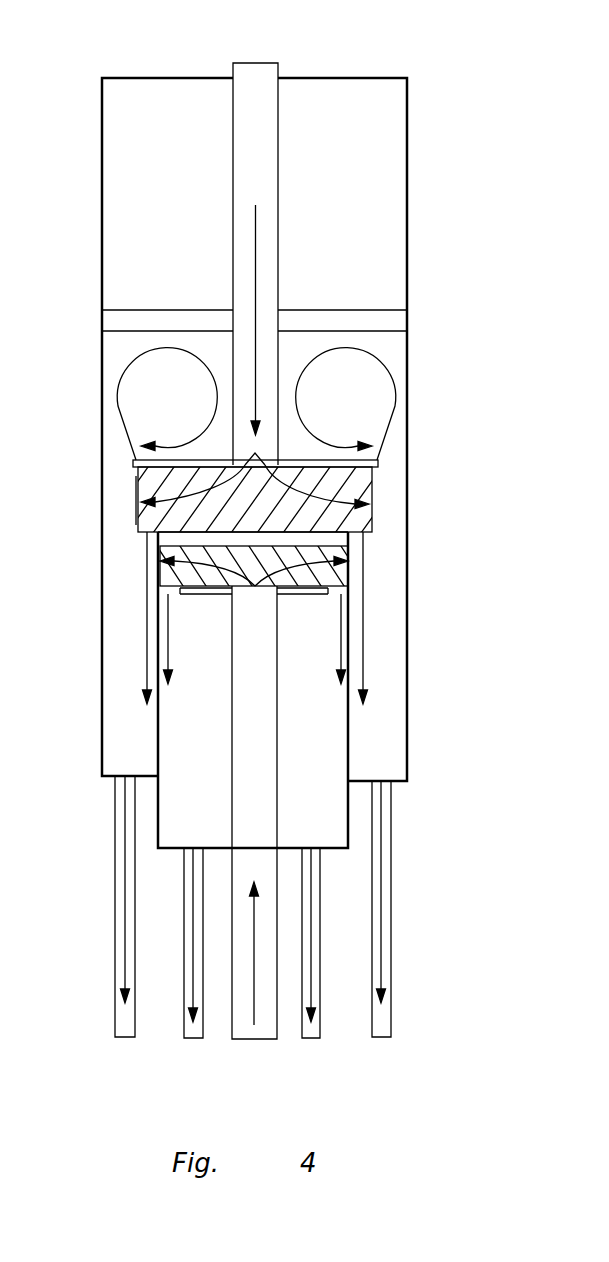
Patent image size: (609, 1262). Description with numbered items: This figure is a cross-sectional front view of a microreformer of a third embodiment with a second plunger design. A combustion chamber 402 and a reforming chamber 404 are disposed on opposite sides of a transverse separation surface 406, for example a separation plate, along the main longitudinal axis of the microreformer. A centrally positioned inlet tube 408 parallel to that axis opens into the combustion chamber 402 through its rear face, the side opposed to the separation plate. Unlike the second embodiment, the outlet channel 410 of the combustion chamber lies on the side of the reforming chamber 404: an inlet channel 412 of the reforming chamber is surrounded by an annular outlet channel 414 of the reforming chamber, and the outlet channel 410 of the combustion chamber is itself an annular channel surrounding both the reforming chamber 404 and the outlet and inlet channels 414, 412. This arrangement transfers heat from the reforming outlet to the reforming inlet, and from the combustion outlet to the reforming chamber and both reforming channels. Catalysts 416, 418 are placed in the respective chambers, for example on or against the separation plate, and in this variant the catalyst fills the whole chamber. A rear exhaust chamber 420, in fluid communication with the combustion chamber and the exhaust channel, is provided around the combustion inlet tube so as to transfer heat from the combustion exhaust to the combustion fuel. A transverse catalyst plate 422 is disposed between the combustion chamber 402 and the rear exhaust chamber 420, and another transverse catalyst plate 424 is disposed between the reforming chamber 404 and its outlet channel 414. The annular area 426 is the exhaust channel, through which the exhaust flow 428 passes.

The combustion chamber 402 is at (137, 494).
The reforming chamber 404 is at (157, 577).
The transverse separation surface 406 is at (147, 535).
The inlet tube 408 is at (263, 63).
The outlet channel of the combustion chamber 410 is at (100, 753).
The inlet channel of the reforming chamber 412 is at (230, 1017).
The outlet channel of the reforming chamber 414 is at (157, 822).
The catalyst 416 is at (142, 506).
The catalyst 418 is at (158, 568).
The rear exhaust chamber 420 is at (367, 388).
The transverse catalyst plate 422 is at (376, 437).
The transverse catalyst plate 424 is at (320, 590).
The annular area 426 is at (383, 525).
The exhaust flow 428 is at (363, 671).